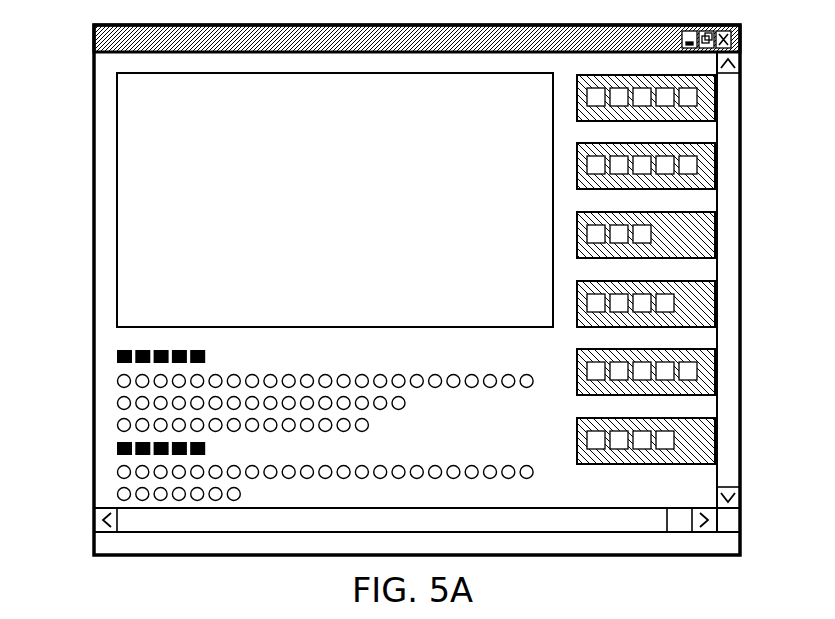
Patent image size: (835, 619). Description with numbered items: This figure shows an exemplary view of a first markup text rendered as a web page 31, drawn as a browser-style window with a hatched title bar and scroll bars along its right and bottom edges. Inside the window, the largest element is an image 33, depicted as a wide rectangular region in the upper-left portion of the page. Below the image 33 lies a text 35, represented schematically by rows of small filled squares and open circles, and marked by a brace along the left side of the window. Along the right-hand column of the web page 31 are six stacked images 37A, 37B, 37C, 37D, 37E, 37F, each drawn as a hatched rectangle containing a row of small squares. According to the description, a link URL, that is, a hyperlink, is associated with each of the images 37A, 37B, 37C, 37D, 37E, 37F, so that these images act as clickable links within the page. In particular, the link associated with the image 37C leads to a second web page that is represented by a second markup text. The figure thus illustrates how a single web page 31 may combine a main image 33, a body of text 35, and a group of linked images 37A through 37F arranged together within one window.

The web page 31 is at (721, 28).
The image 33 is at (125, 102).
The text 35 is at (77, 343).
The image 37A is at (708, 91).
The image 37B is at (708, 159).
The image 37C is at (708, 228).
The image 37D is at (708, 297).
The image 37E is at (708, 365).
The image 37F is at (708, 434).